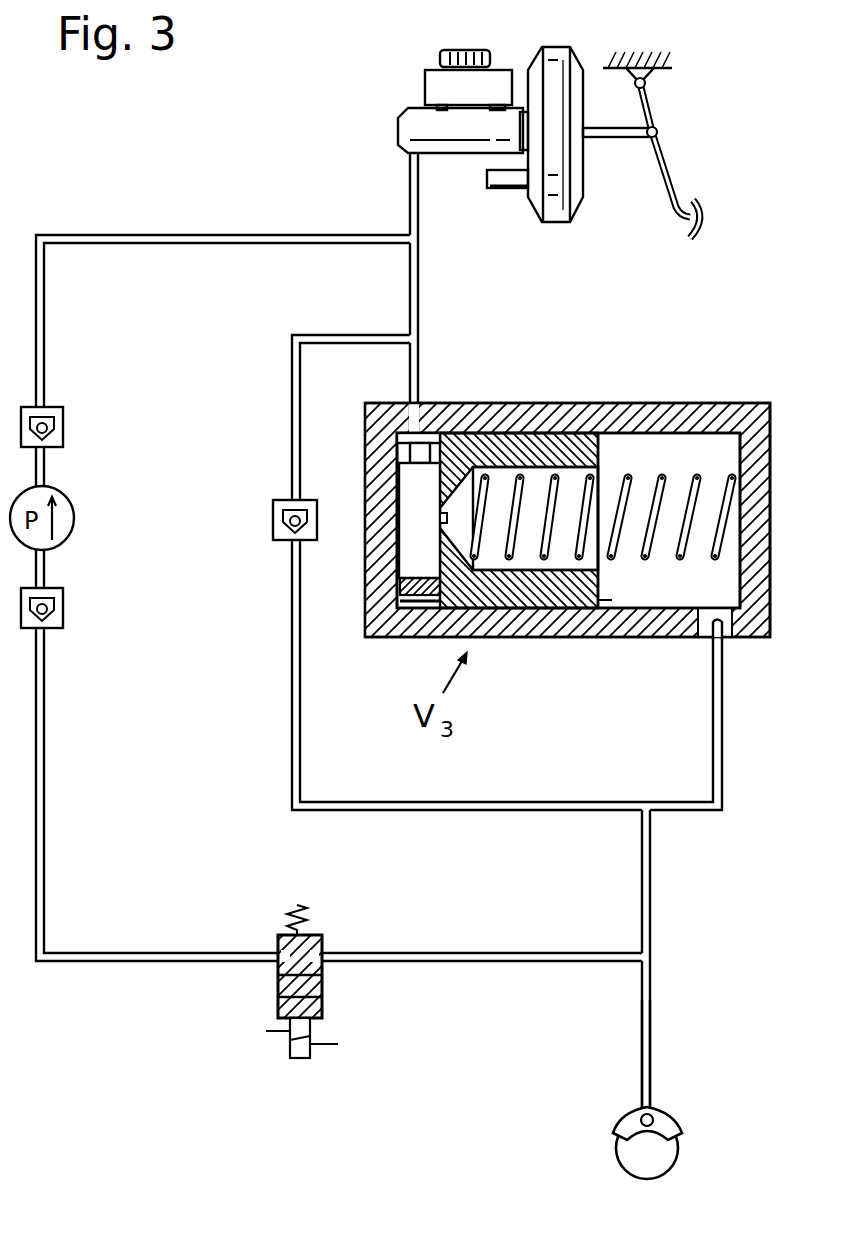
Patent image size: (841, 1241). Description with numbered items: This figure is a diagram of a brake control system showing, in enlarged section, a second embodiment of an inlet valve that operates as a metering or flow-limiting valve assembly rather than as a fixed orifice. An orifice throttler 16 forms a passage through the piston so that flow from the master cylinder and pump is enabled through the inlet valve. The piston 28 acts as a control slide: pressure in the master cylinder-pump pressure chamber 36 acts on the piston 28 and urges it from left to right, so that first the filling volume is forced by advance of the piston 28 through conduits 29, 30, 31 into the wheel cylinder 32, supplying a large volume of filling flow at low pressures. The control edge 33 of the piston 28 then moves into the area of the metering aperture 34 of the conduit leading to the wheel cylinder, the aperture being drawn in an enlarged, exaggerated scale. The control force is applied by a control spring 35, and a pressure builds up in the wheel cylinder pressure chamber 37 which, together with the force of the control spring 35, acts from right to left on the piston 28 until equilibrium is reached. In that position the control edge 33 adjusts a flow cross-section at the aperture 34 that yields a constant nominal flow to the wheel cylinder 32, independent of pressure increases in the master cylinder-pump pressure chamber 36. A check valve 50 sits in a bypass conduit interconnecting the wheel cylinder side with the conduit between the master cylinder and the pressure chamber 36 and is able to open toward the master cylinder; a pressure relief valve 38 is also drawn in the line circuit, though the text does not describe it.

The orifice throttler 16 is at (440, 518).
The piston 28 is at (531, 456).
The conduit 29 is at (724, 764).
The conduit 30 is at (651, 884).
The conduit 31 is at (651, 1012).
The wheel cylinder 32 is at (656, 1117).
The control edge 33 is at (611, 601).
The metering aperture 34 is at (712, 620).
The control spring 35 is at (622, 468).
The master cylinder-pump pressure chamber 36 is at (420, 563).
The wheel cylinder pressure chamber 37 is at (662, 452).
The pressure relief valve 38 is at (323, 985).
The check valve 50 is at (273, 527).